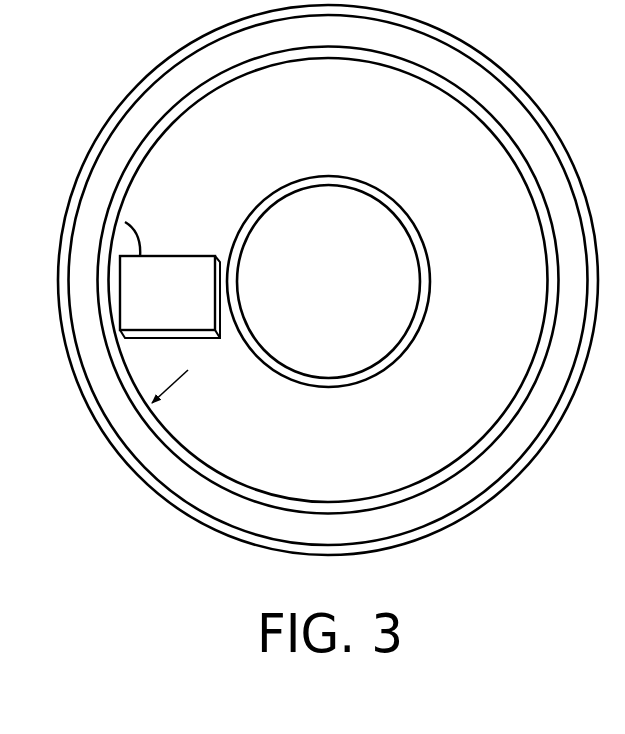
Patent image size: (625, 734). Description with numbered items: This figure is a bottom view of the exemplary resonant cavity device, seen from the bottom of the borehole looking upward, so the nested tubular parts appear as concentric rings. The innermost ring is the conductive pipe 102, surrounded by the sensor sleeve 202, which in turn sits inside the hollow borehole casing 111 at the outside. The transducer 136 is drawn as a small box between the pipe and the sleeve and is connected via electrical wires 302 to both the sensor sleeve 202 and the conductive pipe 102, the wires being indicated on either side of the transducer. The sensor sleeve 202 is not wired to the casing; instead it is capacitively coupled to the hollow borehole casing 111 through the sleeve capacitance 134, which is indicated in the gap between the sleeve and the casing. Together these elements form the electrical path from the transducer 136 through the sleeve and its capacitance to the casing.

The conductive pipe 102 is at (266, 360).
The hollow borehole casing 111 is at (130, 82).
The sleeve capacitance 134 is at (103, 439).
The transducer 136 is at (187, 310).
The sensor sleeve 202 is at (214, 70).
The electrical wires 302 is at (209, 233).